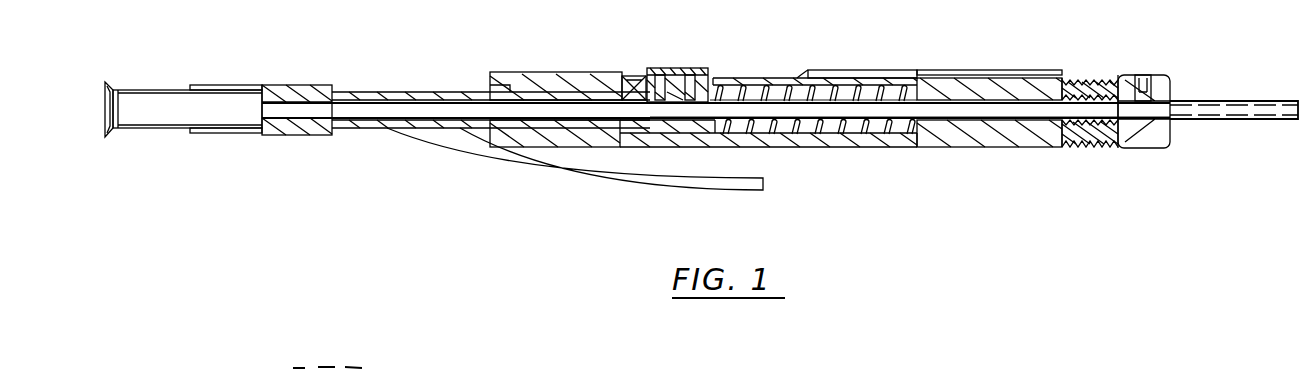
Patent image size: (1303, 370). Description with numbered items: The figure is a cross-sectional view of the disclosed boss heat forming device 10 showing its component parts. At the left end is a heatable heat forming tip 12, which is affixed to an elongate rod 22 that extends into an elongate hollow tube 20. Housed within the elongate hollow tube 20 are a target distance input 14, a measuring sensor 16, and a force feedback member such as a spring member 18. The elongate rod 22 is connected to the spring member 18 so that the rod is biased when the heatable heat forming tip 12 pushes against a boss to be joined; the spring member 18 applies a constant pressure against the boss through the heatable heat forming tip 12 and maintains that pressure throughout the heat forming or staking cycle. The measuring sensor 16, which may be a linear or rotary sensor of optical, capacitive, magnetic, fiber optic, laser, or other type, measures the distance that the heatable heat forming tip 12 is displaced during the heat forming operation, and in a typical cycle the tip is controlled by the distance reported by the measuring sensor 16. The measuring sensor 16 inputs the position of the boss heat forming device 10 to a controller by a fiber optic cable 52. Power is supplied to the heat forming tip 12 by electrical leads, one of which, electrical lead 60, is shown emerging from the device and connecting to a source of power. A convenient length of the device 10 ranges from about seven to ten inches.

The heat forming device 10 is at (436, 35).
The heatable heat forming tip 12 is at (162, 88).
The target distance input 14 is at (713, 72).
The measuring sensor 16 is at (885, 72).
The force feedback member 18 is at (815, 133).
The elongate hollow tube 20 is at (1043, 147).
The elongate rod 22 is at (367, 128).
The fiber optic cable 52 is at (1025, 70).
The electrical lead 60 is at (623, 175).